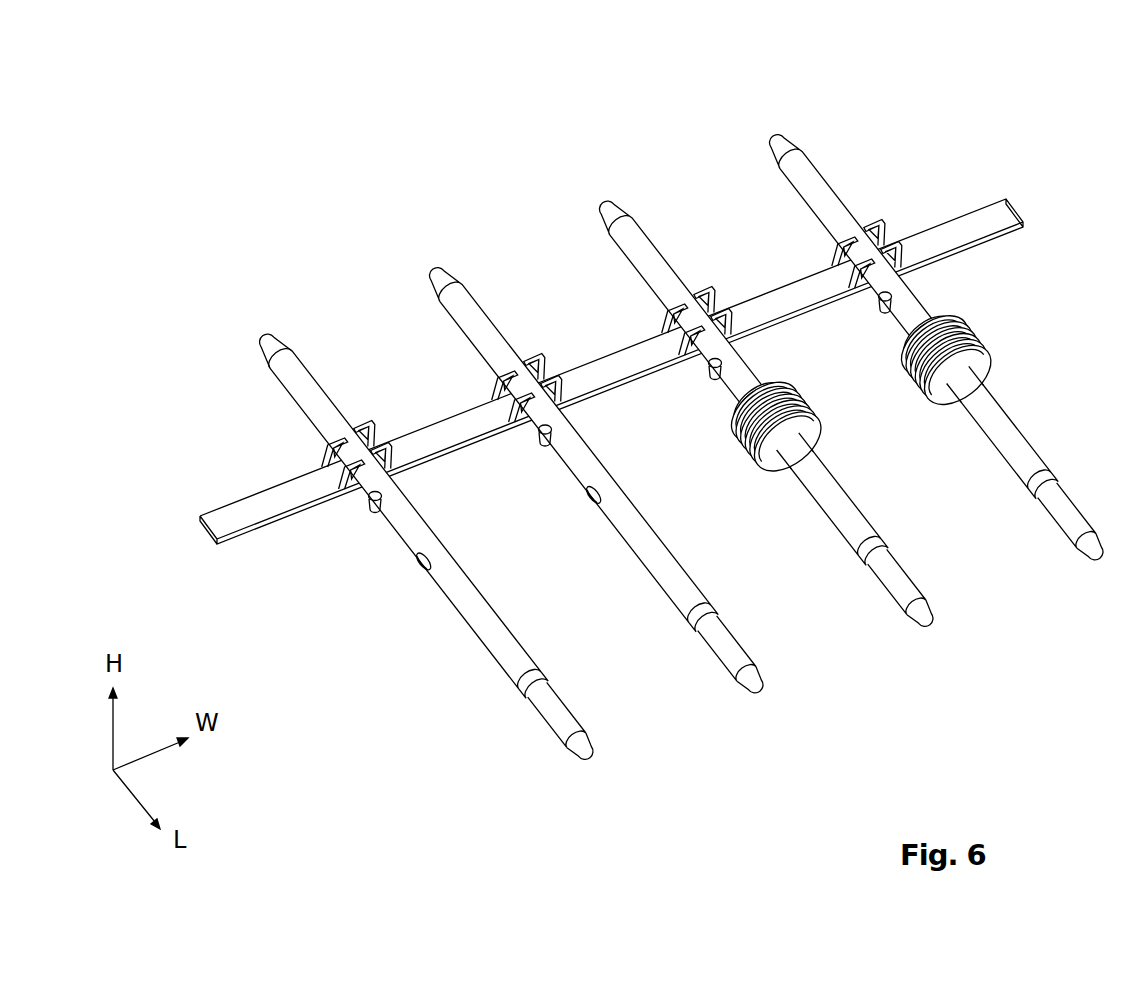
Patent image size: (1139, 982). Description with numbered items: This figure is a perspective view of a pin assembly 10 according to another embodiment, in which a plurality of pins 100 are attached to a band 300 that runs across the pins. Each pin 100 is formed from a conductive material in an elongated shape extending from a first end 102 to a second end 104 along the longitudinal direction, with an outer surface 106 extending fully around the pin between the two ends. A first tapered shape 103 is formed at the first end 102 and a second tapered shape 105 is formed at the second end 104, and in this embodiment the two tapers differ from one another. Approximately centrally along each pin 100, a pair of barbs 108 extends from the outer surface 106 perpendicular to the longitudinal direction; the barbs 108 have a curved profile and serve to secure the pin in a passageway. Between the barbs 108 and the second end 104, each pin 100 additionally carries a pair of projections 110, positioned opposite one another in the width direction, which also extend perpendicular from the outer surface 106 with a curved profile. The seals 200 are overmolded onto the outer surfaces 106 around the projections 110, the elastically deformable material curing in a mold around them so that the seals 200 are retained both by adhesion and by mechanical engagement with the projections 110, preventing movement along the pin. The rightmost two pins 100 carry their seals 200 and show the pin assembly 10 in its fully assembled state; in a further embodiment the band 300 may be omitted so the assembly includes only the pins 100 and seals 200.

The pin assembly 10 is at (651, 436).
The pin 100 is at (640, 439).
The first end 102 is at (262, 338).
The first tapered shape 103 is at (262, 359).
The second end 104 is at (580, 758).
The second tapered shape 105 is at (537, 720).
The outer surface 106 is at (457, 626).
The barb 108 is at (371, 507).
The projection 110 is at (417, 567).
The seal 200 is at (788, 483).
The band 300 is at (220, 513).